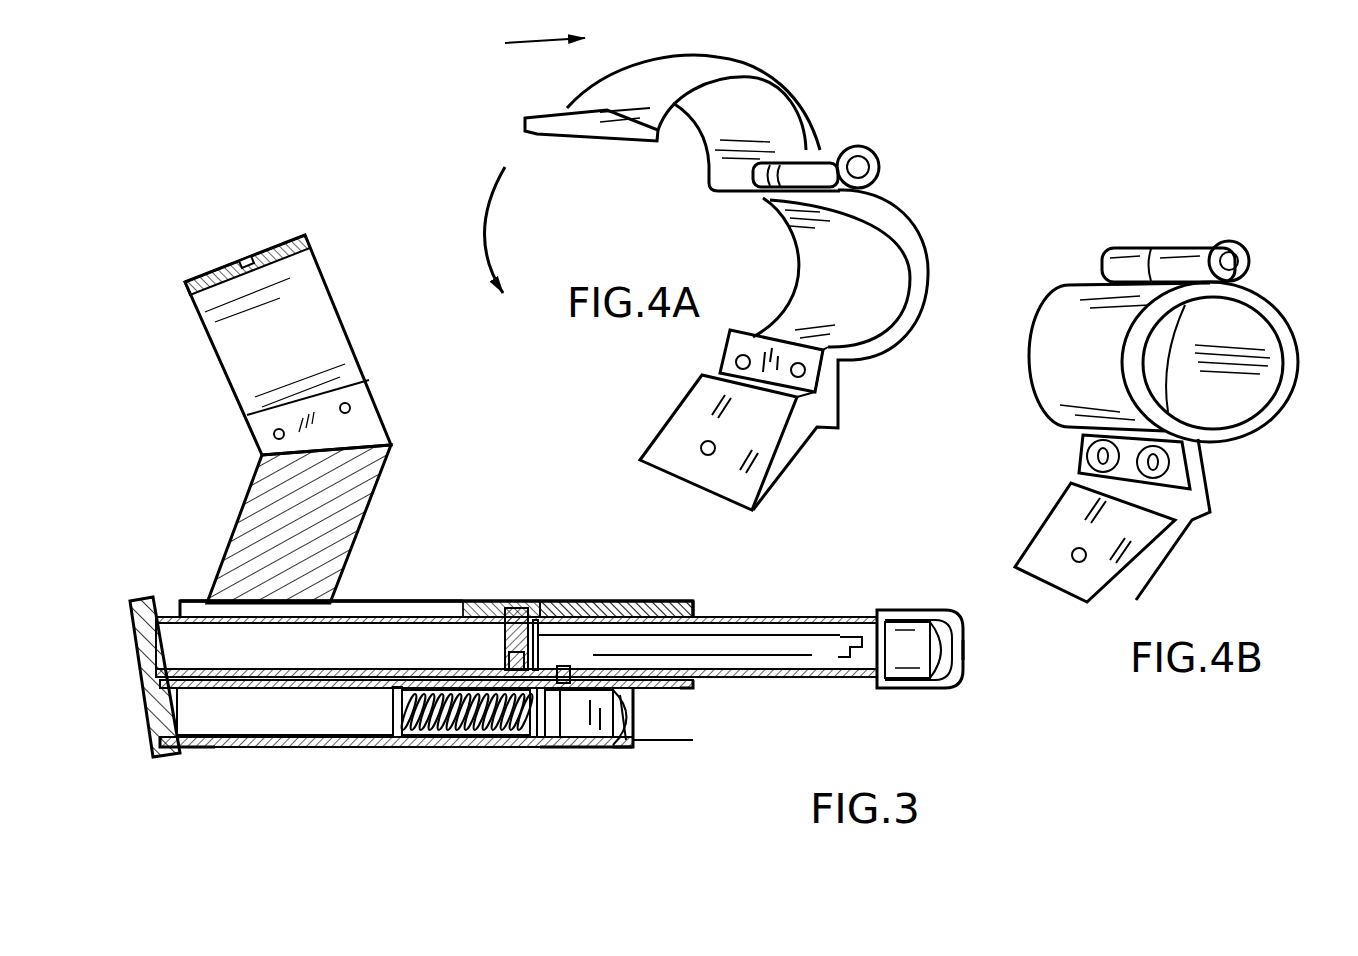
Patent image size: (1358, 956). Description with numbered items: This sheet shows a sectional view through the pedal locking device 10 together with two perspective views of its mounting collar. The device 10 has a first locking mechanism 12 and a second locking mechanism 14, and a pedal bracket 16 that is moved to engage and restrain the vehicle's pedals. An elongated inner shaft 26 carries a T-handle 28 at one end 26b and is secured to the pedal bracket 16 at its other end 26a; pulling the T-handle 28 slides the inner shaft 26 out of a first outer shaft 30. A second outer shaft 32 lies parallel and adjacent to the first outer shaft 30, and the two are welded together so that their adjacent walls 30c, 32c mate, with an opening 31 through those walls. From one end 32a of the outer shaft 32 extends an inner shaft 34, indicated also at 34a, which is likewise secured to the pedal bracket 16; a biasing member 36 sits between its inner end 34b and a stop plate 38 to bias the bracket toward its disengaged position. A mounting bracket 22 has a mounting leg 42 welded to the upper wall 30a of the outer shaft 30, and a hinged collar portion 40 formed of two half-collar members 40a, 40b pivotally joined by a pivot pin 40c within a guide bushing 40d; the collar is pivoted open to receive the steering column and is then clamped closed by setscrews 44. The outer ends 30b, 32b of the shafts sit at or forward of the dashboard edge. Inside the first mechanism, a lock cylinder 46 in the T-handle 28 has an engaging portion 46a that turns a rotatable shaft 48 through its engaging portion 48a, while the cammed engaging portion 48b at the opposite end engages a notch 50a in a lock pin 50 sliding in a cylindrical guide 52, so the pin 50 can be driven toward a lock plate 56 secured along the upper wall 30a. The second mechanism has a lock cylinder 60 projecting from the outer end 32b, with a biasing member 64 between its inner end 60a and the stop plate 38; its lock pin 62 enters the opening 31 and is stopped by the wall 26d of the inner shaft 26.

In FIG. 3, the pedal locking device 10 is at (470, 500).
In FIG. 3, the first locking mechanism 12 is at (975, 683).
In FIG. 3, the second locking mechanism 14 is at (715, 742).
In FIG. 3, the pedal bracket 16 is at (130, 652).
In FIG. 3, the mounting bracket 22 is at (218, 248).
In FIG. 4A, the mounting bracket 22 is at (625, 110).
In FIG. 4B, the mounting bracket 22 is at (1160, 193).
In FIG. 3, the inner shaft 26 is at (815, 605).
In FIG. 3, the end of inner shaft 26a is at (165, 600).
In FIG. 3, the end of inner shaft 26b is at (870, 690).
In FIG. 3, the wall of inner shaft 26d is at (745, 678).
In FIG. 3, the T-handle 28 is at (965, 650).
In FIG. 3, the first outer elongated shaft 30 is at (378, 592).
In FIG. 3, the upper wall of outer shaft 30a is at (415, 600).
In FIG. 3, the outer end of outer shaft 30b is at (700, 595).
In FIG. 3, the adjacent wall of outer shaft 30c is at (672, 690).
In FIG. 3, the opening or passageway 31 is at (636, 727).
In FIG. 3, the second outer elongated shaft 32 is at (250, 755).
In FIG. 3, the end of outer shaft 32a is at (190, 752).
In FIG. 3, the outer end of outer shaft 32b is at (610, 748).
In FIG. 3, the adjacent wall of outer shaft 32c is at (283, 675).
In FIG. 3, the inner elongated shaft 34 is at (272, 722).
In FIG. 3, the chamber floor 34a is at (177, 727).
In FIG. 3, the inner end of inner shaft 34b is at (352, 747).
In FIG. 3, the biasing member 36 is at (428, 750).
In FIG. 3, the stop plate 38 is at (500, 750).
In FIG. 3, the hinged collar portion 40 is at (213, 372).
In FIG. 4A, the hinged collar portion 40 is at (643, 202).
In FIG. 4B, the hinged collar portion 40 is at (1287, 282).
In FIG. 3, the half-collar member 40a is at (318, 318).
In FIG. 4A, the half-collar member 40a is at (928, 262).
In FIG. 4B, the half-collar member 40a is at (1268, 428).
In FIG. 4A, the half-collar member 40b is at (790, 77).
In FIG. 4B, the half-collar member 40b is at (1075, 308).
In FIG. 3, the pivot pin 40c is at (300, 250).
In FIG. 4A, the pivot pin 40c is at (763, 203).
In FIG. 3, the guide bushing 40d is at (266, 247).
In FIG. 4A, the guide bushing 40d is at (850, 152).
In FIG. 4B, the guide bushing 40d is at (1200, 245).
In FIG. 3, the mounting leg 42 is at (352, 502).
In FIG. 4A, the mounting leg 42 is at (682, 425).
In FIG. 4B, the mounting leg 42 is at (1168, 556).
In FIG. 4B, the setscrews 44 is at (1140, 466).
In FIG. 3, the lock cylinder 46 is at (925, 645).
In FIG. 3, the engaging portion of lock cylinder 46a is at (870, 640).
In FIG. 3, the rotatable shaft 48 is at (748, 645).
In FIG. 3, the engaging portion 48a is at (856, 672).
In FIG. 3, the cammed engaging portion 48b is at (557, 602).
In FIG. 3, the lock pin 50 is at (513, 602).
In FIG. 3, the notch 50a is at (505, 637).
In FIG. 3, the cylindrical guide 52 is at (505, 652).
In FIG. 3, the lock plate 56 is at (587, 605).
In FIG. 3, the lock cylinder 60 is at (632, 750).
In FIG. 3, the inner end of lock cylinder 60a is at (563, 750).
In FIG. 3, the lock pin 62 is at (597, 750).
In FIG. 3, the biasing member 64 is at (543, 750).